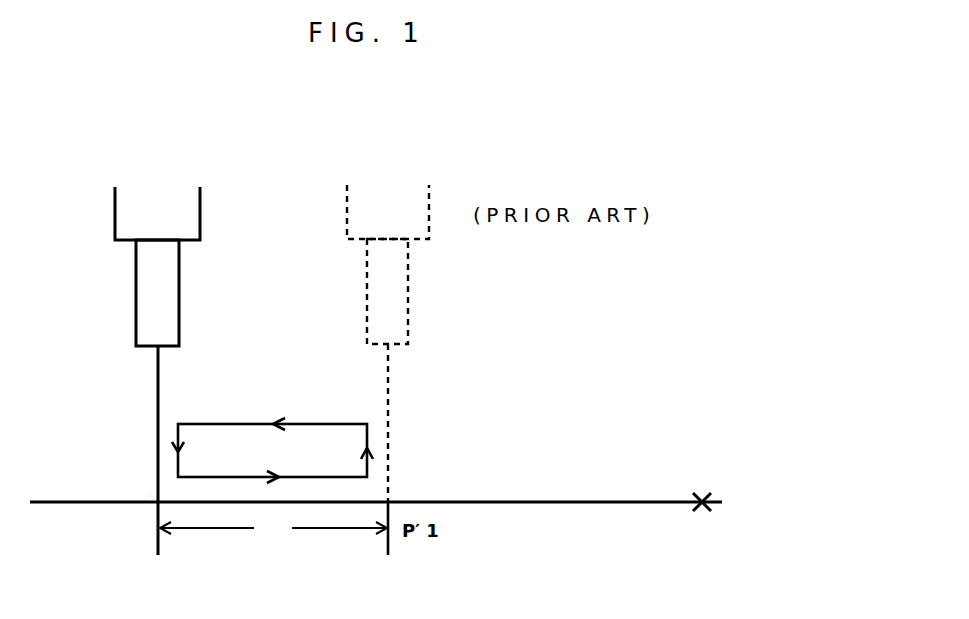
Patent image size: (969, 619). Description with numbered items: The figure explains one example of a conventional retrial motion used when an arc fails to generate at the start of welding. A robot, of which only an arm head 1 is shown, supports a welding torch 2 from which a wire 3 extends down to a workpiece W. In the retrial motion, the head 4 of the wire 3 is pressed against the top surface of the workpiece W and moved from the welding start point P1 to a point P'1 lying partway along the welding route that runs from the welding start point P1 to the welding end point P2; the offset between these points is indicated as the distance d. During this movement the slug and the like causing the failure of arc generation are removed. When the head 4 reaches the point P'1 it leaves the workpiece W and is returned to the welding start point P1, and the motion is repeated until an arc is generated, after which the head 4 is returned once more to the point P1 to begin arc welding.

The arm head 1 is at (115, 222).
The welding torch 2 is at (136, 300).
The wire 3 is at (158, 400).
The head of the wire 4 is at (150, 495).
The workpiece W is at (523, 542).
The offset distance d is at (273, 529).
The welding start point P1 is at (150, 513).
The welding end point P2 is at (698, 517).